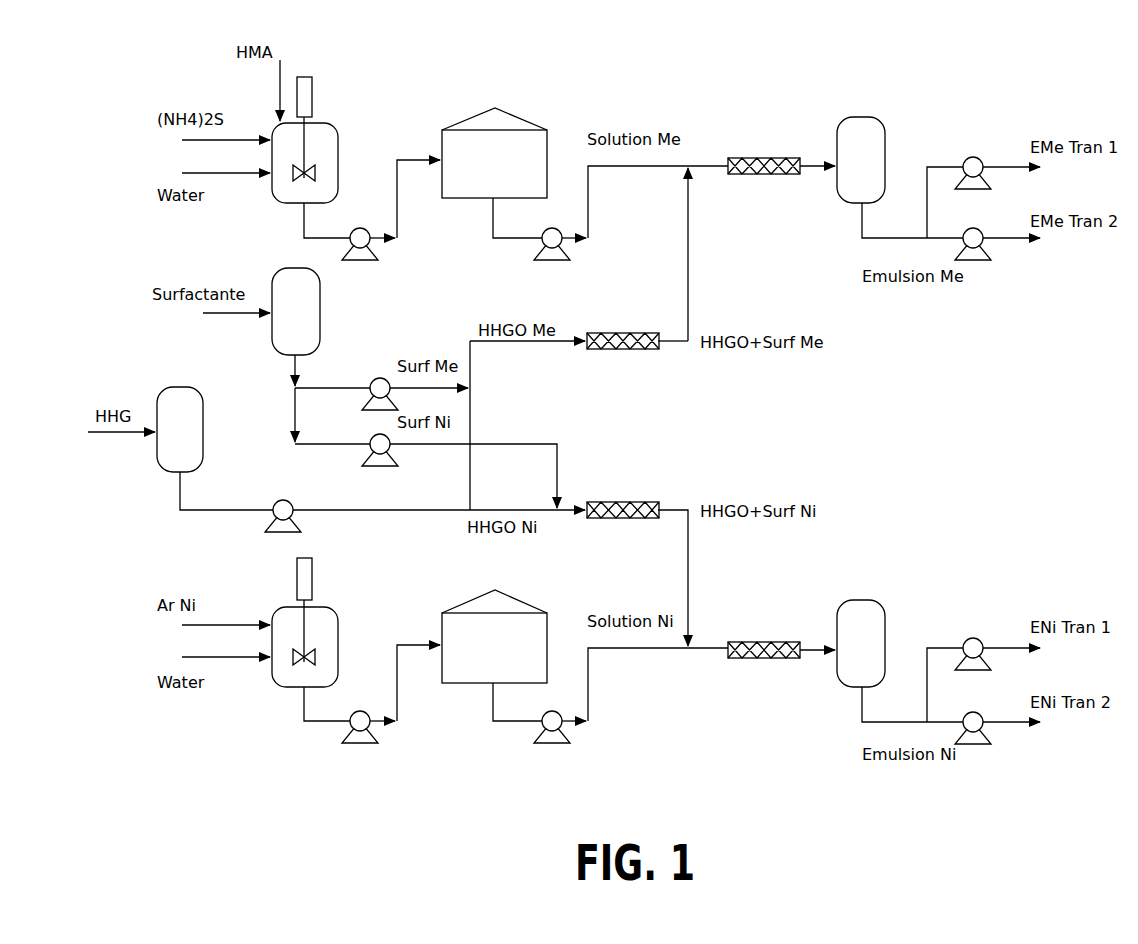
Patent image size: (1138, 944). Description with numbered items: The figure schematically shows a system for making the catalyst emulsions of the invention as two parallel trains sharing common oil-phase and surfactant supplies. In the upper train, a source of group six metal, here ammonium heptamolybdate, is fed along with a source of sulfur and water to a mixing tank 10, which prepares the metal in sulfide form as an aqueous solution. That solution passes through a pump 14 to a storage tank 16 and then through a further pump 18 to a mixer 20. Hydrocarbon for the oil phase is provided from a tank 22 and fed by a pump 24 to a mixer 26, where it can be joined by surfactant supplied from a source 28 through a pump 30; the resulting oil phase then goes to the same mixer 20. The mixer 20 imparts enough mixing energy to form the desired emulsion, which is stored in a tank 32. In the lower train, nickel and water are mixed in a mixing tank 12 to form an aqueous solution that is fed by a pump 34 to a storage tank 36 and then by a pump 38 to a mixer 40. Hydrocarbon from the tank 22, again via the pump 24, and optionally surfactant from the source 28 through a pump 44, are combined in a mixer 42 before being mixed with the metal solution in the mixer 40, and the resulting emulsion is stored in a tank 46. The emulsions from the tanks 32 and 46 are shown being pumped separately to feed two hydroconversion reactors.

The mixing tank 10 is at (340, 122).
The mixing tank 12 is at (340, 606).
The pump 14 is at (358, 228).
The storage tank 16 is at (508, 112).
The pump 18 is at (555, 262).
The mixer 20 is at (769, 148).
The tank 22 is at (203, 415).
The pump 24 is at (288, 498).
The mixer 26 is at (632, 333).
The surfactant source 28 is at (320, 312).
The pump 30 is at (380, 378).
The tank 32 is at (885, 138).
The pump 34 is at (358, 711).
The storage tank 36 is at (505, 595).
The pump 38 is at (555, 745).
The mixer 40 is at (767, 640).
The mixer 42 is at (620, 500).
The pump 44 is at (385, 466).
The tank 46 is at (885, 622).